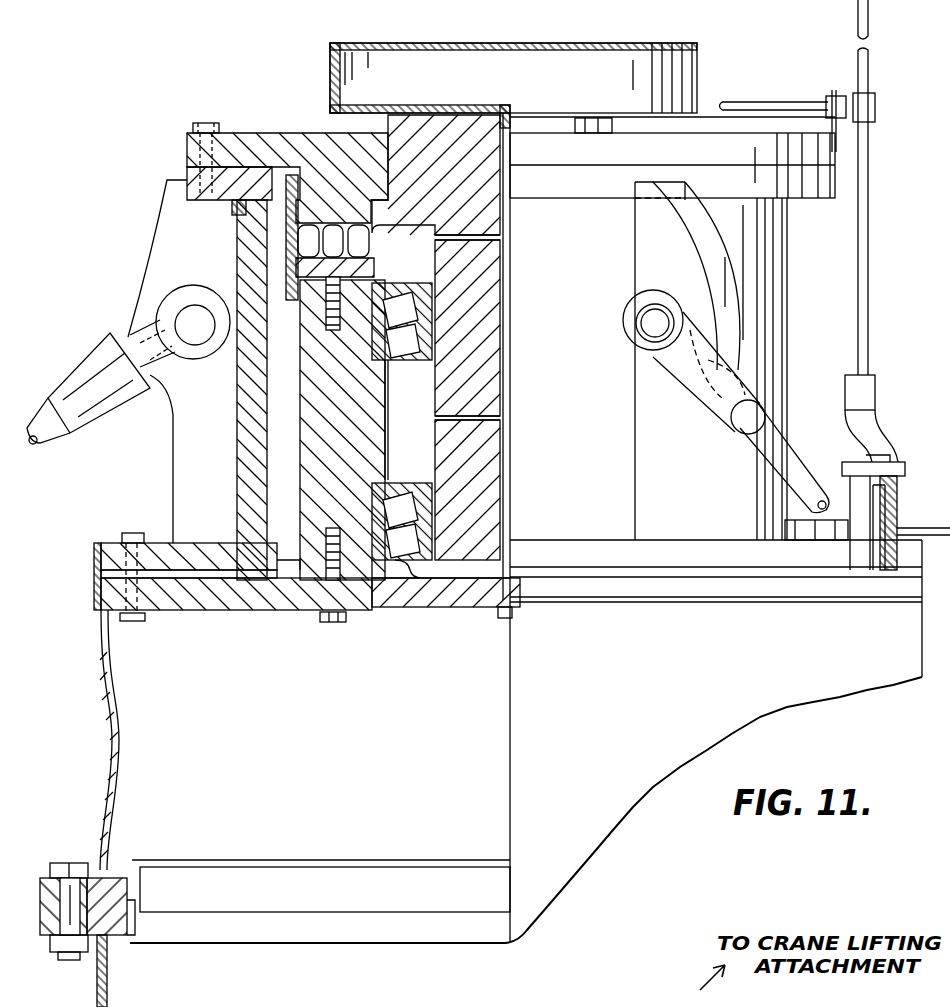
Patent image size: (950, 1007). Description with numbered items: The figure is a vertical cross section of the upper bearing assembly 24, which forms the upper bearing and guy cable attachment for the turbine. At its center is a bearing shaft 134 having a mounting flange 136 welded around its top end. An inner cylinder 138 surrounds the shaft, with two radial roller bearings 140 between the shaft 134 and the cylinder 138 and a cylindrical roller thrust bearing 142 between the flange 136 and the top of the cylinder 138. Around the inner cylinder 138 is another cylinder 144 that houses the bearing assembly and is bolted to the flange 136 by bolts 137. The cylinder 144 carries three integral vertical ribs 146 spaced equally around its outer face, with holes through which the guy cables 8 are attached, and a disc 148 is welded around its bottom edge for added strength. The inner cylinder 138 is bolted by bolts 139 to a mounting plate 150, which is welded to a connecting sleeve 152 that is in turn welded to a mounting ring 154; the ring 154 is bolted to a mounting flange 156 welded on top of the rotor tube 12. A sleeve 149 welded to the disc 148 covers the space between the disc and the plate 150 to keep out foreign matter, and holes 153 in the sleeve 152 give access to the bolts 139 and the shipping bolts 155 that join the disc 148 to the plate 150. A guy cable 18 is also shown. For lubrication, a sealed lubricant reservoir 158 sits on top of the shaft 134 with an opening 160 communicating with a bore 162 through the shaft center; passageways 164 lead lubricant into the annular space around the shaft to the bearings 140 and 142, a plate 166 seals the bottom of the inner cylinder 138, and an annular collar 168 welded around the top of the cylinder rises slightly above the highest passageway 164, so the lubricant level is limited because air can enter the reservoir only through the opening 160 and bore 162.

The guy cables 8 is at (800, 480).
The rotor tube 12 is at (110, 985).
The rod 18 is at (870, 12).
The upper bearing assembly 24 is at (150, 108).
The bearing shaft 134 is at (495, 477).
The mounting flange 136 is at (250, 133).
The bolts 137 is at (197, 120).
The inner cylinder 138 is at (380, 440).
The bolts 139 is at (333, 624).
The radial roller bearings 140 is at (428, 313).
The cylindrical roller thrust bearing 142 is at (280, 215).
The cylinder 144 is at (240, 271).
The vertical ribs 146 is at (648, 268).
The disc 148 is at (108, 545).
The sleeve 149 is at (100, 575).
The mounting plate 150 is at (230, 608).
The connecting sleeve 152 is at (100, 637).
The holes 153 is at (110, 731).
The mounting ring 154 is at (228, 878).
The bolts 155 is at (134, 622).
The mounting flange 156 is at (135, 930).
The lubricant reservoir 158 is at (697, 76).
The opening 160 is at (505, 108).
The bore 162 is at (505, 353).
The passageways 164 is at (500, 237).
The plate 166 is at (436, 602).
The annular collar 168 is at (288, 215).